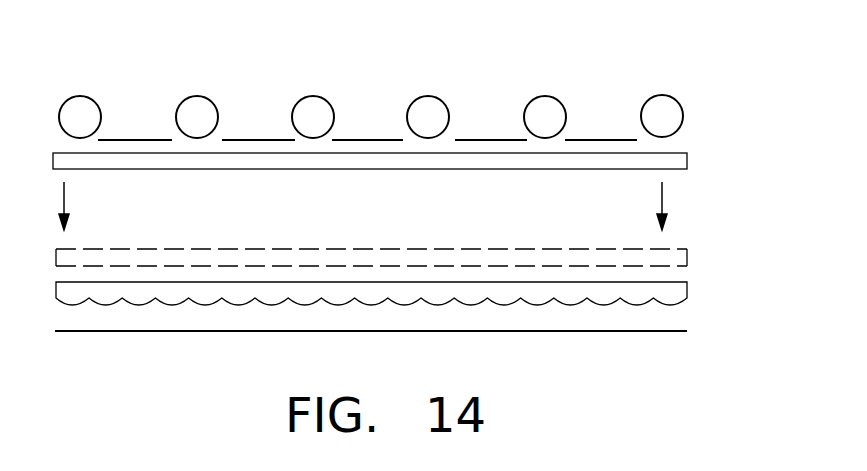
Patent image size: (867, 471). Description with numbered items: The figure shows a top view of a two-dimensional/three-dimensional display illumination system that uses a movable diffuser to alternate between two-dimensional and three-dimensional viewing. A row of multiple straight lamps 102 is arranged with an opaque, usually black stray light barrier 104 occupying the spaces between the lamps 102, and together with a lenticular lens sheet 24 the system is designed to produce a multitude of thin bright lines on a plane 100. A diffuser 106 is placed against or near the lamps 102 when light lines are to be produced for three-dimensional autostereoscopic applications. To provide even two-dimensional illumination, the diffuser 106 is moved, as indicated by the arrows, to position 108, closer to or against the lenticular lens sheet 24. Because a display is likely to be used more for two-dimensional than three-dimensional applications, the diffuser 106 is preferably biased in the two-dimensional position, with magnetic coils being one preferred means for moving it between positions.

The straight lamps 102 is at (197, 107).
The stray light barrier 104 is at (490, 140).
The diffuser 106 is at (687, 163).
The position of the diffuser for 2D illumination 108 is at (687, 257).
The lenticular lens sheet 24 is at (687, 287).
The plane 100 is at (673, 333).